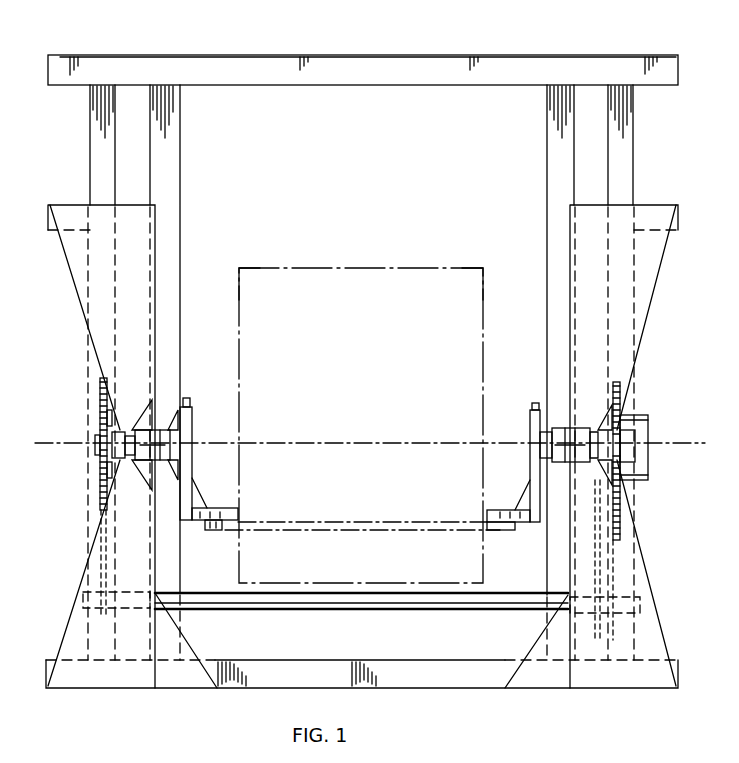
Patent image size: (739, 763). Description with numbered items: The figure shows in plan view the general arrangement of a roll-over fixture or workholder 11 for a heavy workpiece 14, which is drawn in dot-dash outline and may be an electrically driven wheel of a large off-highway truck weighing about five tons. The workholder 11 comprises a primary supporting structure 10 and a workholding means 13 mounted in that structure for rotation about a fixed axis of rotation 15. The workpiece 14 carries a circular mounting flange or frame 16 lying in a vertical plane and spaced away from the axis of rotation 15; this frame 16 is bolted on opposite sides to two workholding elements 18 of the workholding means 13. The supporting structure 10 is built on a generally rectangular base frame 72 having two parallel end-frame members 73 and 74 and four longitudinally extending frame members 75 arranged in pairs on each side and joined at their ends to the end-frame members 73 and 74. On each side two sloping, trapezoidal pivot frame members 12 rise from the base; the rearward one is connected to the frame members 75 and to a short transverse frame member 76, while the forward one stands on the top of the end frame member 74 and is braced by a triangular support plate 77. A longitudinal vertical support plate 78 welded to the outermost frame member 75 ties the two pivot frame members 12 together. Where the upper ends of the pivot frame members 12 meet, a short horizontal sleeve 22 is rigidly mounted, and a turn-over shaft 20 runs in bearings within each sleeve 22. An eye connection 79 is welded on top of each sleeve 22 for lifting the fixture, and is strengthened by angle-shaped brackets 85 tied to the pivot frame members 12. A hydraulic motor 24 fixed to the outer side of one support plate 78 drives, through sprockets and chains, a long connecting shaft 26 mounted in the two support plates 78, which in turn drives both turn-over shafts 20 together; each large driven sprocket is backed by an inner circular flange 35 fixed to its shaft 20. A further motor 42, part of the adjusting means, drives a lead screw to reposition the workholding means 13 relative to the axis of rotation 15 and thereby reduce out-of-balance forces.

The primary supporting structure 10 is at (402, 52).
The workholder or rollover fixture 11 is at (641, 318).
The sloping pivot frame member 12 is at (650, 250).
The workholding means 13 is at (193, 431).
The workpiece 14 is at (322, 268).
The axis of rotation 15 is at (59, 446).
The mounting flange or frame 16 is at (210, 525).
The workholding element 18 is at (187, 485).
The turn-over shaft 20 is at (632, 440).
The sleeve 22 is at (548, 425).
The motor 24 is at (637, 420).
The connecting shaft 26 is at (478, 612).
The inner circular flange 35 is at (103, 418).
The motor 42 is at (532, 406).
The base frame 72 is at (609, 68).
The end-frame member 73 is at (419, 80).
The end frame member 74 is at (254, 675).
The longitudinally extending frame member 75 is at (170, 185).
The short transversely extending frame member 76 is at (50, 222).
The triangular support plate 77 is at (535, 652).
The vertical support plate 78 is at (612, 222).
The eye connection 79 is at (100, 440).
The angle-shaped bracket 85 is at (586, 420).